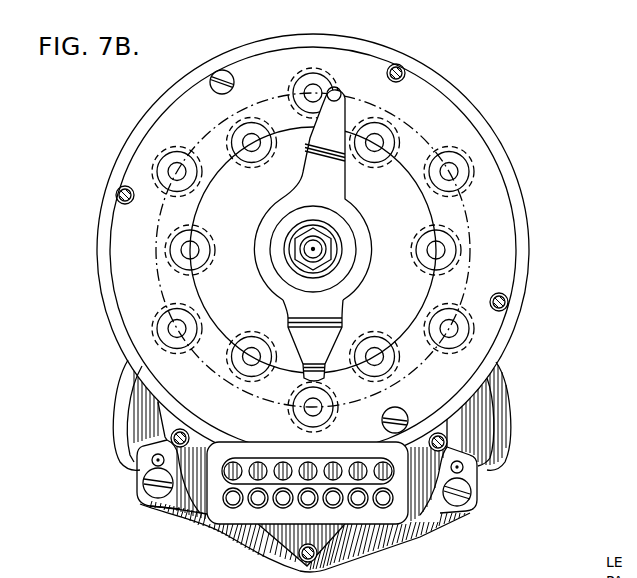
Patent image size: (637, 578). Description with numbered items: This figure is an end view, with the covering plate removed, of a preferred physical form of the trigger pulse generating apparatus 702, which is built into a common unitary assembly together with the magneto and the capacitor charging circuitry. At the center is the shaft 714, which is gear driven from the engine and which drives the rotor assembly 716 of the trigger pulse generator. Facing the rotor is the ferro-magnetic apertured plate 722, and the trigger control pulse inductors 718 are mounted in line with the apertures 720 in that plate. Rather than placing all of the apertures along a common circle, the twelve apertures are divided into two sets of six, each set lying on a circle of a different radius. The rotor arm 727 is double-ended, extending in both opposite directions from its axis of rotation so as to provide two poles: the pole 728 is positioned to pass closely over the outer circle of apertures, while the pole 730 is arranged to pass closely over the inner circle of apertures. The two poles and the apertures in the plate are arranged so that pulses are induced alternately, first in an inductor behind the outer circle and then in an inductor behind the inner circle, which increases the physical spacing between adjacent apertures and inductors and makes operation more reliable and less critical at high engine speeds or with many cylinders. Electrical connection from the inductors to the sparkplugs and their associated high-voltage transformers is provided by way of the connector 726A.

The trigger pulse generating apparatus 702 is at (449, 126).
The shaft 714 is at (306, 253).
The rotor assembly 716 is at (257, 233).
The trigger control pulse inductors 718 is at (311, 88).
The apertures 720 is at (327, 82).
The ferro-magnetic apertured plate 722 is at (503, 213).
The connector 726A is at (220, 503).
The rotor arm 727 is at (334, 181).
The pole 728 is at (344, 93).
The pole 730 is at (303, 374).